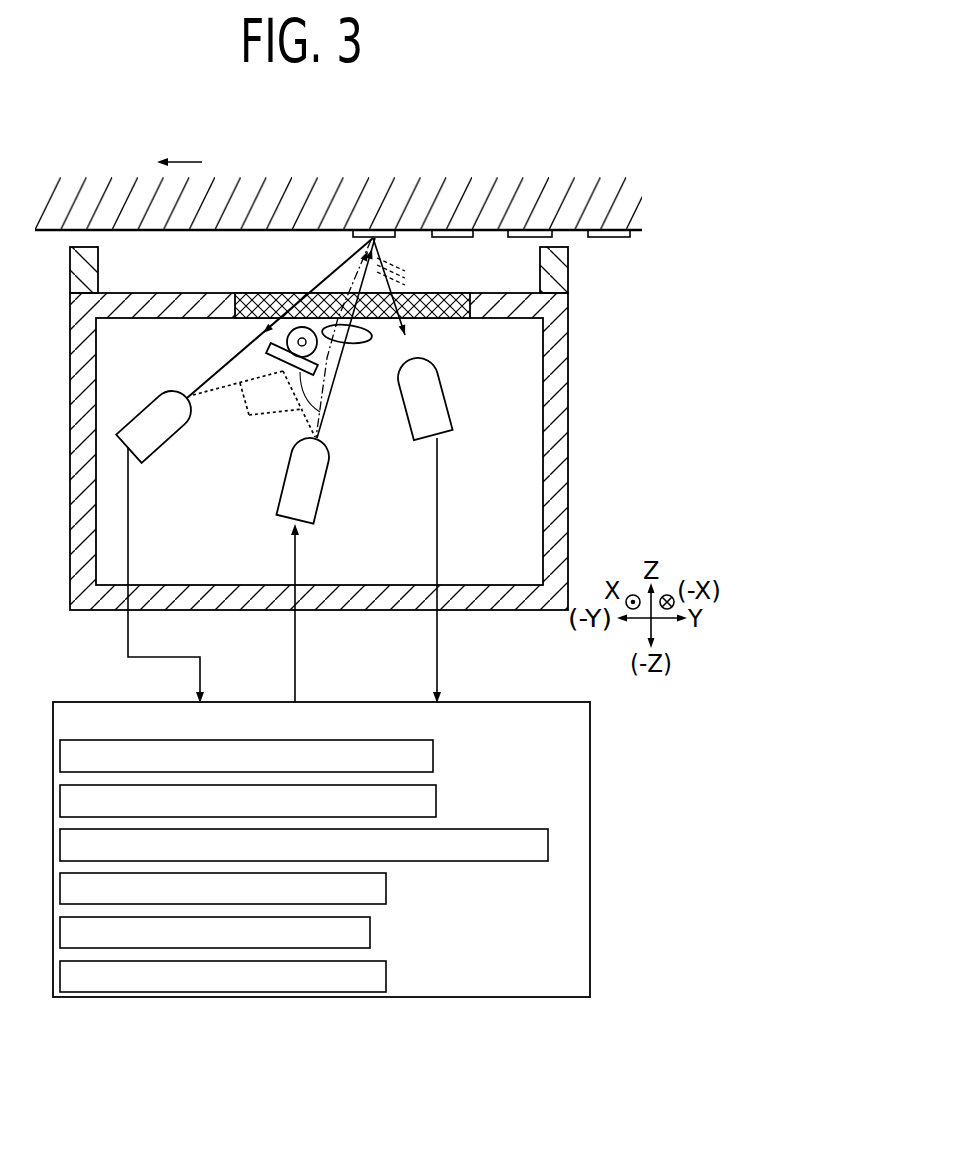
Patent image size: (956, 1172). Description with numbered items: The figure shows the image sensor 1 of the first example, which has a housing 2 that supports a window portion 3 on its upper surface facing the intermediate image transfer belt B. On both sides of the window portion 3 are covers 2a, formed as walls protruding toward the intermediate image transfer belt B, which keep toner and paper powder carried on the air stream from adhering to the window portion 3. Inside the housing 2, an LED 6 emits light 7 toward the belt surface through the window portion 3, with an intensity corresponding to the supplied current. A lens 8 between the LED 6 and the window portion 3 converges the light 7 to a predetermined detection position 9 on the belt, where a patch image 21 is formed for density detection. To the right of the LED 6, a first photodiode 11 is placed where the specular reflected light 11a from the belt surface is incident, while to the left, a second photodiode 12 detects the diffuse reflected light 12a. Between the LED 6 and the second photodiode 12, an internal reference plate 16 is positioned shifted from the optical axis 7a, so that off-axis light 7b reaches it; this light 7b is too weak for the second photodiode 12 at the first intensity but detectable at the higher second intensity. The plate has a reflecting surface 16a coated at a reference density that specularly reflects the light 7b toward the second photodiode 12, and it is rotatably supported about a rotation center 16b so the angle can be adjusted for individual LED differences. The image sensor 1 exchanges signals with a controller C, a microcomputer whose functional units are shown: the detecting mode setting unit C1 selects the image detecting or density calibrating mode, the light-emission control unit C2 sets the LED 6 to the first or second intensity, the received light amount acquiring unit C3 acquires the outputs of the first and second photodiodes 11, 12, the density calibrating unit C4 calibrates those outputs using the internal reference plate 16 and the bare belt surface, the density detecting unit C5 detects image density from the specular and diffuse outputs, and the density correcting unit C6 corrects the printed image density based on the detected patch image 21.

The intermediate image transfer belt B is at (633, 203).
The patch image 21 is at (398, 234).
The housing 2 is at (565, 535).
The cover 2a is at (74, 271).
The window portion 3 is at (247, 293).
The internal reference plate 16 is at (262, 351).
The reflecting surface 16a is at (302, 376).
The rotation center 16b is at (300, 327).
The lens 8 is at (359, 342).
The detection position 9 is at (365, 241).
The light 7 is at (399, 276).
The optical axis 7a is at (340, 369).
The light 7b is at (254, 407).
The second photodiode 12 is at (170, 435).
The diffuse reflected light 12a is at (211, 378).
The first photodiode 11 is at (443, 405).
The specular reflected light 11a is at (409, 342).
The LED 6 is at (318, 497).
The image sensor 1 is at (622, 471).
The controller C is at (332, 849).
The detecting mode setting unit C1 is at (265, 756).
The light-emission control unit C2 is at (267, 801).
The received light amount acquiring unit C3 is at (321, 845).
The density calibrating unit C4 is at (242, 888).
The density detecting unit C5 is at (233, 932).
The density correcting unit C6 is at (242, 976).